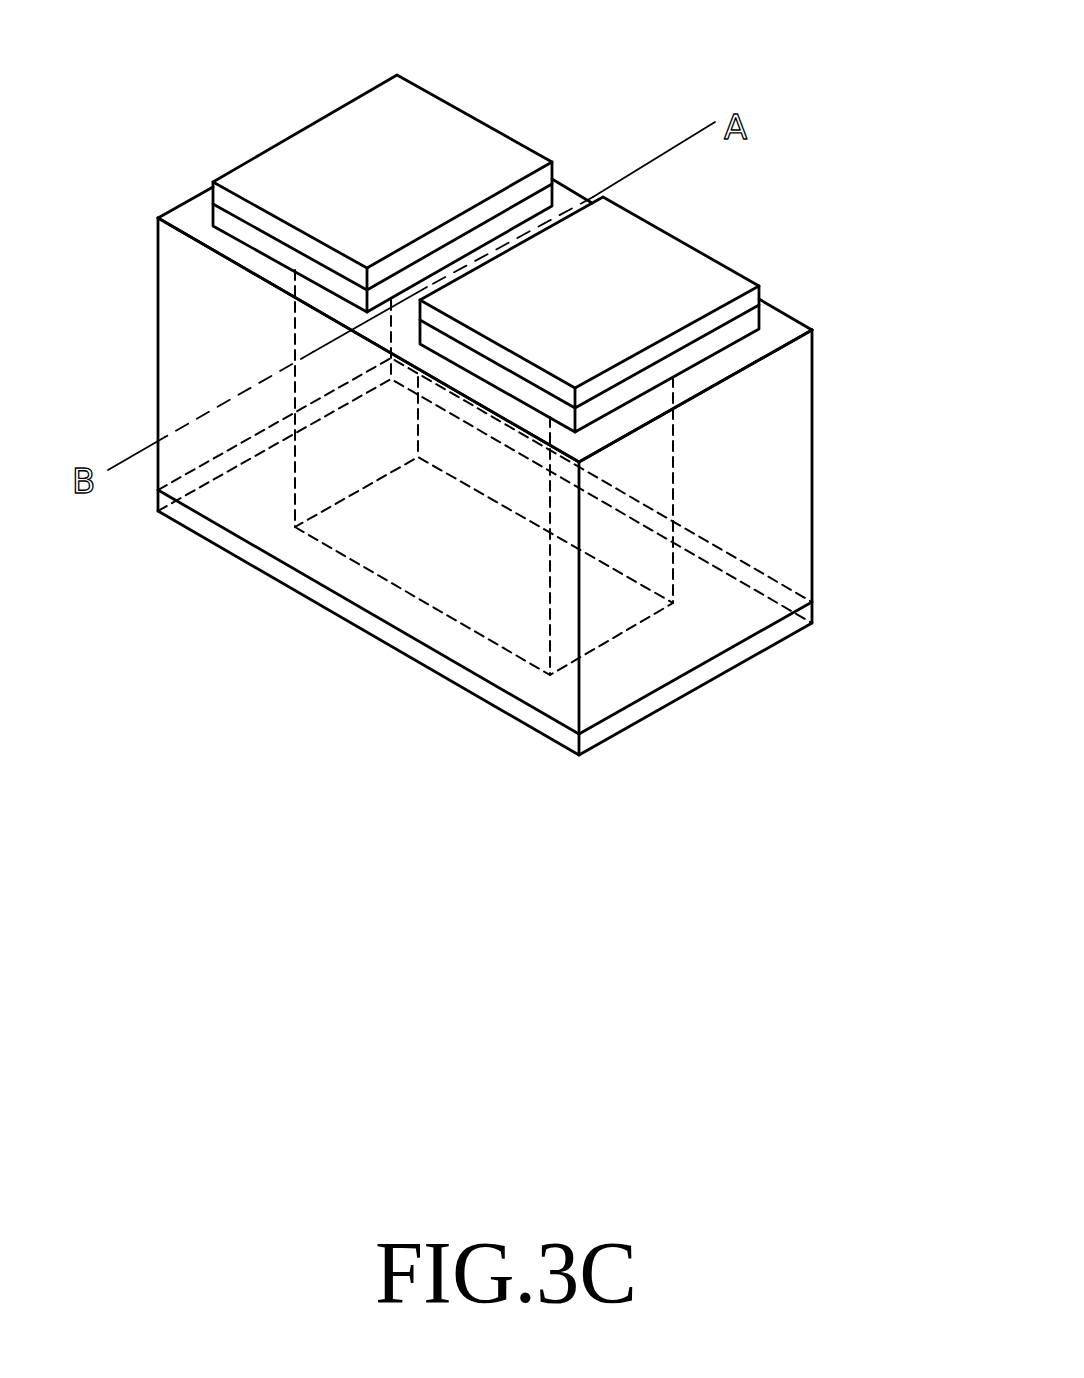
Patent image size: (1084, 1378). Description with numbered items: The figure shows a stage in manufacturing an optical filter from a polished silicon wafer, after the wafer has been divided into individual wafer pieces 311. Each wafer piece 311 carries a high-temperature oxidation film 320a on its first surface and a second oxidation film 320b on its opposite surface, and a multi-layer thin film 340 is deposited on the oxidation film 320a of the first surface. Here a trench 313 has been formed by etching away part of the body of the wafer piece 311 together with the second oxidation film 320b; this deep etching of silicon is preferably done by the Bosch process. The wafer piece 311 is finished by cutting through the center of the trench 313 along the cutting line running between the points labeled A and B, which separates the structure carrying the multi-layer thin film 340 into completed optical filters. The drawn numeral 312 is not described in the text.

The wafer piece 311 is at (793, 460).
The first chip (semiconductor device) 312 is at (542, 216).
The trench 313 is at (427, 567).
The oxidation film 320a is at (813, 330).
The second oxidation film 320b is at (197, 522).
The multi-layer thin film 340 is at (757, 288).